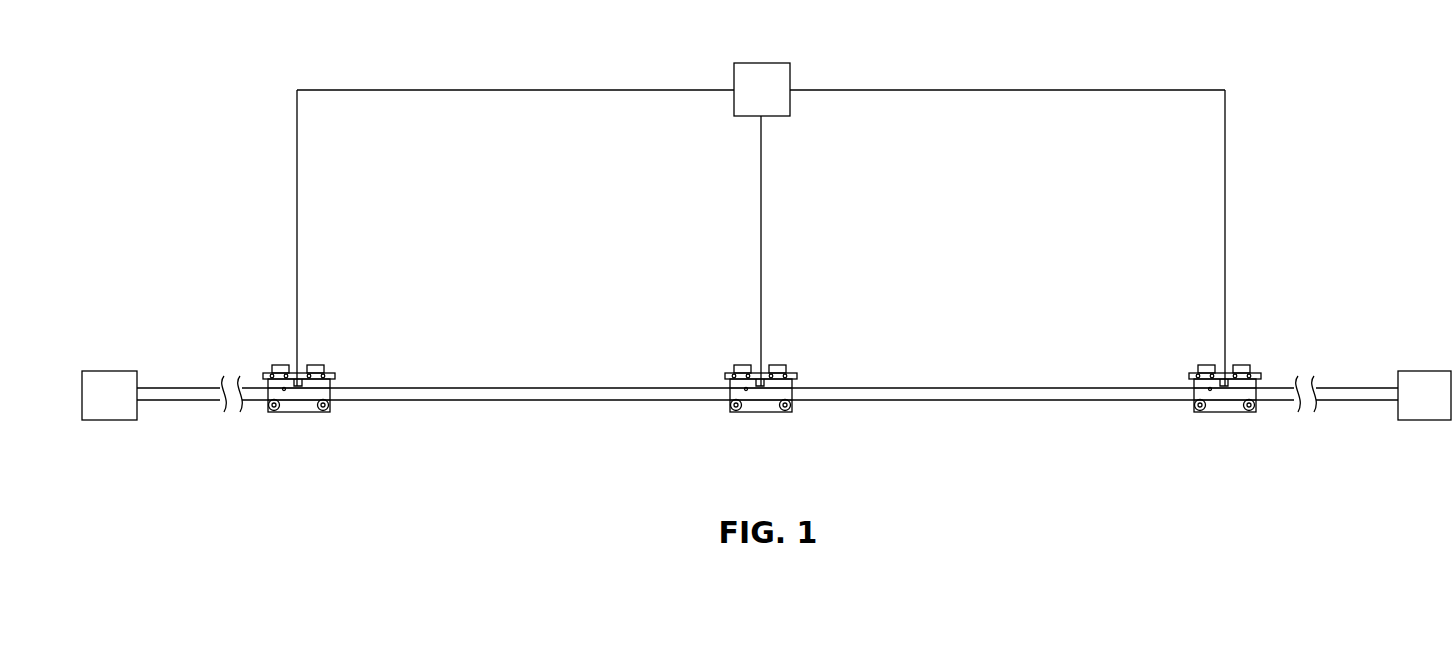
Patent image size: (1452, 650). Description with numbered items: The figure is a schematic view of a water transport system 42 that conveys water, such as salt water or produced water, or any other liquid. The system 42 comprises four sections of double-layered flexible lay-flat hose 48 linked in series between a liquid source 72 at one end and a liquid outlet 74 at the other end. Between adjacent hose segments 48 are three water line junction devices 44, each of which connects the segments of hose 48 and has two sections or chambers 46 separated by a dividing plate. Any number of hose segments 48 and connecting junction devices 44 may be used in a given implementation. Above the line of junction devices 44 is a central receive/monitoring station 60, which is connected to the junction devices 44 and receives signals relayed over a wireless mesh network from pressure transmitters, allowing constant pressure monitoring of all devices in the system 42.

The water transport system 42 is at (1062, 54).
The water line junction device 44 is at (312, 360).
The chambers 46 is at (270, 410).
The double-layered flexible lay-flat hose 48 is at (208, 387).
The central receive/monitoring station 60 is at (748, 105).
The liquid source 72 is at (96, 412).
The liquid outlet 74 is at (1411, 412).